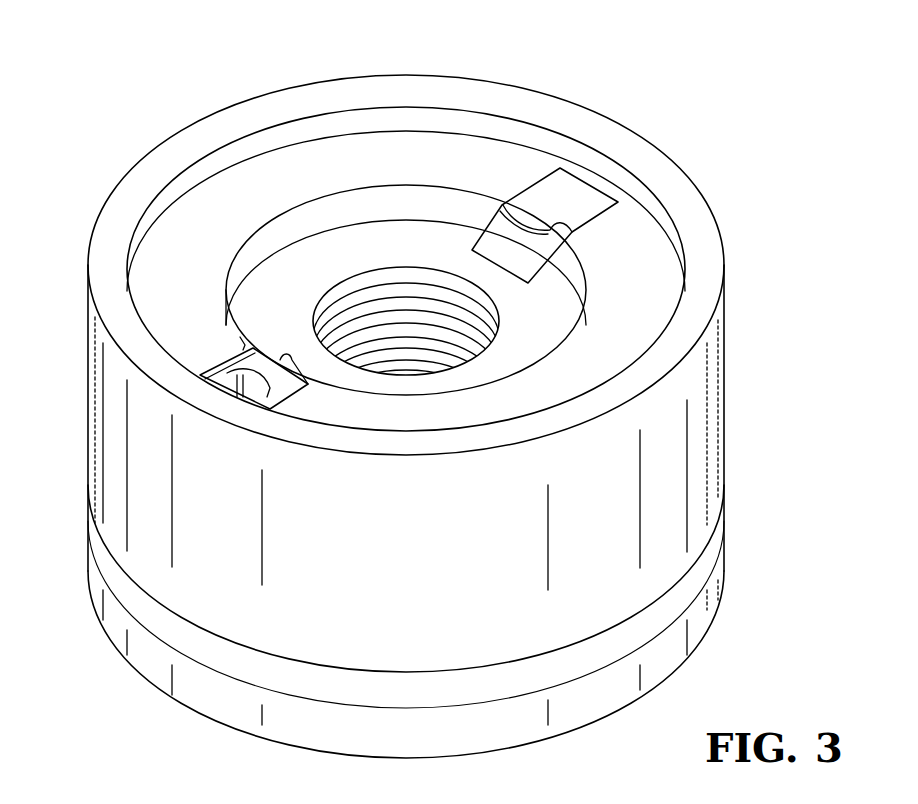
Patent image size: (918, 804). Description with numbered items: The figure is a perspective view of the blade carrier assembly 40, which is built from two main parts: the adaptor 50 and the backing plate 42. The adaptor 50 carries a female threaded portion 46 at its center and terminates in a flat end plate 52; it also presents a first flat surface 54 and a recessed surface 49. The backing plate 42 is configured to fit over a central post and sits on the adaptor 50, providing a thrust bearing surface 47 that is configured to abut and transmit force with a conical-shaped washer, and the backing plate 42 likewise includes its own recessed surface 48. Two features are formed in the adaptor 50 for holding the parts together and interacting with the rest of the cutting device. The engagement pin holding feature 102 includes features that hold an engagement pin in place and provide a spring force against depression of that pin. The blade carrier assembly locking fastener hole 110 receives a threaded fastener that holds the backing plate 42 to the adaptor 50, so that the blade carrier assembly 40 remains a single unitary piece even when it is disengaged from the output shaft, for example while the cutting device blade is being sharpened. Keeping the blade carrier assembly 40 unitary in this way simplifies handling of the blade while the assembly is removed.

The blade carrier assembly 40 is at (128, 200).
The backing plate 42 is at (700, 438).
The female threaded portion 46 is at (382, 287).
The thrust bearing surface 47 is at (452, 95).
The recessed surface 48 is at (652, 270).
The recessed surface 49 is at (315, 260).
The adaptor 50 is at (724, 577).
The flat end plate 52 is at (215, 700).
The first flat surface 54 is at (652, 610).
The engagement pin holding feature 102 is at (227, 373).
The blade carrier assembly locking fastener hole 110 is at (565, 203).